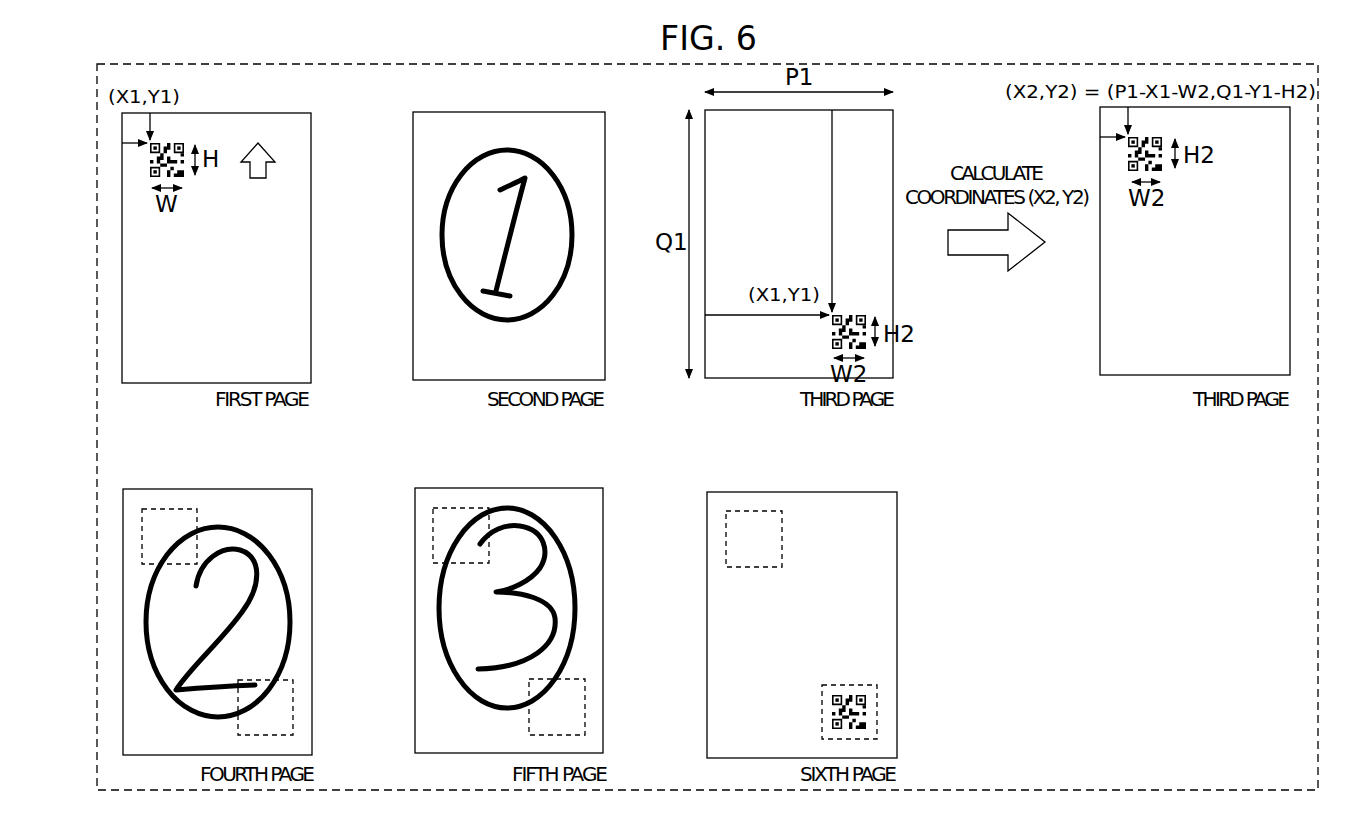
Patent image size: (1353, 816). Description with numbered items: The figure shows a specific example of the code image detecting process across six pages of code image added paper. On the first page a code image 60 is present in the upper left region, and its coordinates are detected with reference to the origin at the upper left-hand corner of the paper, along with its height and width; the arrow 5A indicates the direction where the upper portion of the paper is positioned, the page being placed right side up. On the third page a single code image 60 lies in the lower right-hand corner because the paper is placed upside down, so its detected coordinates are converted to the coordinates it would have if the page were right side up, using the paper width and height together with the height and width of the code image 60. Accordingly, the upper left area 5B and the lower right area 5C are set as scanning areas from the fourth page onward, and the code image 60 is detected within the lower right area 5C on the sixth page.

The code image 60 is at (190, 186).
The arrow 5A is at (273, 160).
The upper left area 5B is at (167, 509).
The lower right area 5C is at (293, 706).